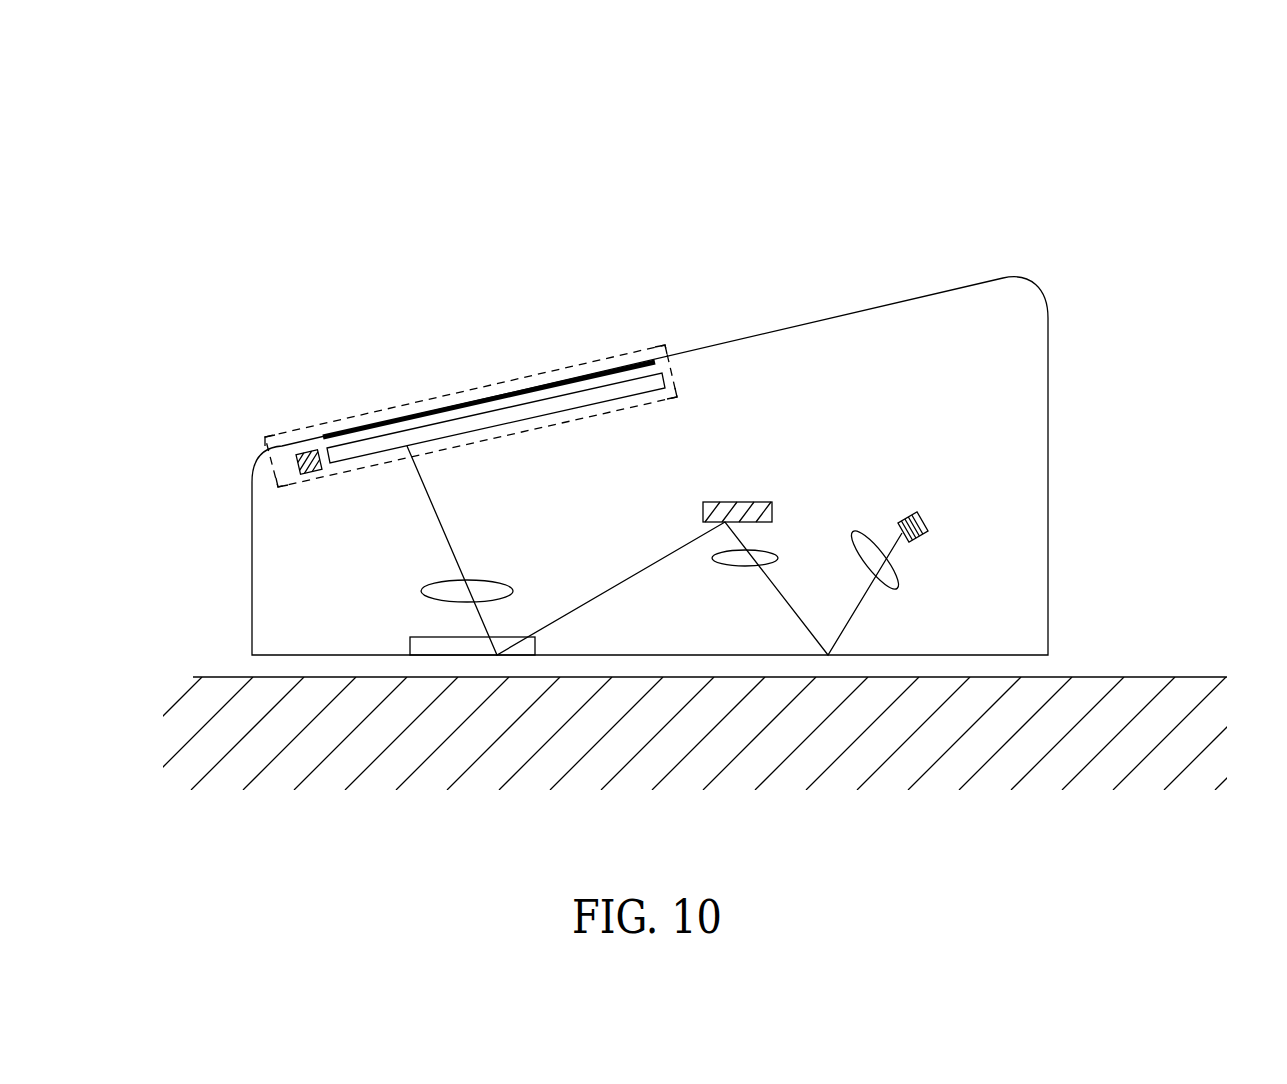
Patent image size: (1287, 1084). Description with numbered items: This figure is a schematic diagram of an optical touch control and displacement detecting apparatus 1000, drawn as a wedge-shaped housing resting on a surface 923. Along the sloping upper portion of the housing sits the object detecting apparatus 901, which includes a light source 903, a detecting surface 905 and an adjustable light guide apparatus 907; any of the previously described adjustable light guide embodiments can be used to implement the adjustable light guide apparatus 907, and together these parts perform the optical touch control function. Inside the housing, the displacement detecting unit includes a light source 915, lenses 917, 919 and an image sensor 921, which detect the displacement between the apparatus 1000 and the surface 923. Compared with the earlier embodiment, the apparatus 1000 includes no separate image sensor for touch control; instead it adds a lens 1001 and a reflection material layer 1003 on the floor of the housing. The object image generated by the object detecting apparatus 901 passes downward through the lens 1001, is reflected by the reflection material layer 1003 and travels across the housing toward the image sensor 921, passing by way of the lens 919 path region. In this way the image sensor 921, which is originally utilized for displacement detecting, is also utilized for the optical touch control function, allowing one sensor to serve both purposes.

The optical touch control and displacement detecting apparatus 1000 is at (1106, 200).
The object detecting apparatus 901 is at (460, 392).
The light source 903 is at (298, 460).
The detecting surface 905 is at (367, 425).
The adjustable light guide apparatus 907 is at (597, 397).
The light source 915 is at (922, 520).
The lens 917 is at (897, 590).
The lens 919 is at (780, 558).
The image sensor 921 is at (738, 501).
The surface 923 is at (1153, 677).
The lens 1001 is at (421, 591).
The reflection material layer 1003 is at (410, 645).